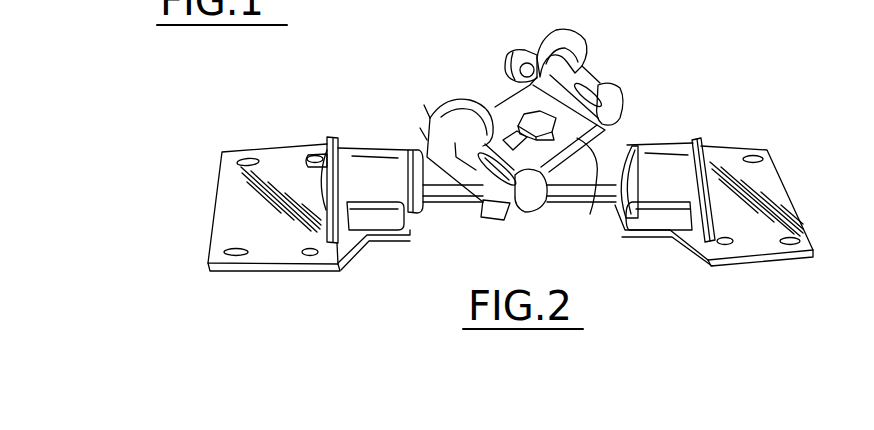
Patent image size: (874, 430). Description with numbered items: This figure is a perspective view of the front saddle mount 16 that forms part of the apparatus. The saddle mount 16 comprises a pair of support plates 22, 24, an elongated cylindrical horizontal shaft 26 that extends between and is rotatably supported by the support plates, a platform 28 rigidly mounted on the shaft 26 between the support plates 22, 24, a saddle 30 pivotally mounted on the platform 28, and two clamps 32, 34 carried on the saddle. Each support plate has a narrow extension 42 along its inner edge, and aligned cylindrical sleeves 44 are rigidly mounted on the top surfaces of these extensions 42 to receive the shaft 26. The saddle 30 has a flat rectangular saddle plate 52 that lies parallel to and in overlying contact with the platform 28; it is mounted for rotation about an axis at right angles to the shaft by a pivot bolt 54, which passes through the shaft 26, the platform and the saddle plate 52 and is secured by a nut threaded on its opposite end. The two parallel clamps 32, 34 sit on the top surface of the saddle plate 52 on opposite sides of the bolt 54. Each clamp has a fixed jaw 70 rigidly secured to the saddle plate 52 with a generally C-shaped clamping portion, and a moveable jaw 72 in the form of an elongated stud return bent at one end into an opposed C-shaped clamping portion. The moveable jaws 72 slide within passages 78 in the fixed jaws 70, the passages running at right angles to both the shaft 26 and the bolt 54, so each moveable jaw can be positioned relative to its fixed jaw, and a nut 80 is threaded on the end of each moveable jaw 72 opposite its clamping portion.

The saddle mount 16 is at (792, 151).
The support plate 22 is at (217, 190).
The support plate 24 is at (785, 198).
The shaft 26 is at (455, 207).
The platform 28 is at (612, 137).
The saddle 30 is at (606, 51).
The clamp 32 is at (424, 105).
The clamp 34 is at (552, 24).
The extension 42 is at (380, 243).
The cylindrical sleeve 44 is at (352, 143).
The saddle plate 52 is at (592, 205).
The bolt 54 is at (502, 112).
The fixed jaw 70 is at (447, 99).
The moveable jaw 72 is at (533, 213).
The passage 78 is at (487, 213).
The nut 80 is at (420, 128).